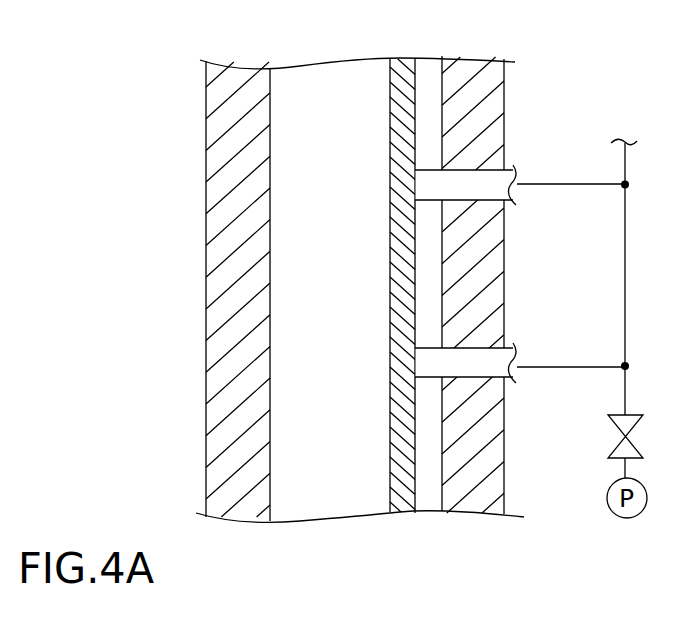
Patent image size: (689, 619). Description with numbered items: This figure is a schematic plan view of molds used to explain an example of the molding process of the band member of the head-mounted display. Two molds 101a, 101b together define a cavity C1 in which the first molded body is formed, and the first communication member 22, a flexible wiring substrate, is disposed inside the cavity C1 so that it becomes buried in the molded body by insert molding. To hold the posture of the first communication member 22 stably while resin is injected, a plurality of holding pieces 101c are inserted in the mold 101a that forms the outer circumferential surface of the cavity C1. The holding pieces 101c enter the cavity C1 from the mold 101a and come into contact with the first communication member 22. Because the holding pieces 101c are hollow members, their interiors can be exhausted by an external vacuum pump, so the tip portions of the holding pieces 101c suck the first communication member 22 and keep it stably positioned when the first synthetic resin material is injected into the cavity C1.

The first communication member 22 is at (402, 59).
The mold 101a is at (505, 105).
The mold 101b is at (206, 117).
The holding pieces 101c is at (477, 190).
The cavity C1 is at (321, 504).